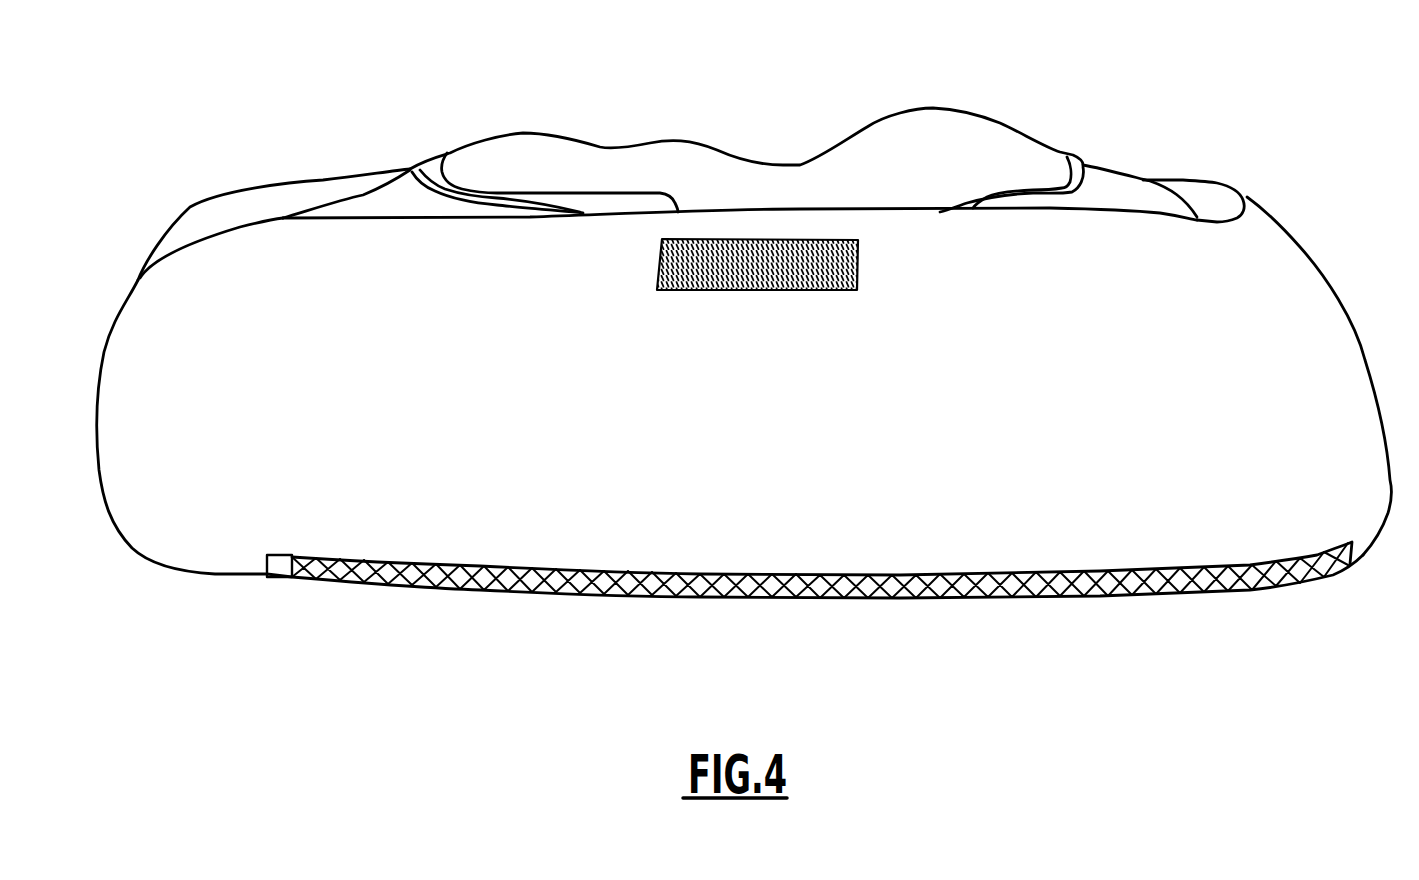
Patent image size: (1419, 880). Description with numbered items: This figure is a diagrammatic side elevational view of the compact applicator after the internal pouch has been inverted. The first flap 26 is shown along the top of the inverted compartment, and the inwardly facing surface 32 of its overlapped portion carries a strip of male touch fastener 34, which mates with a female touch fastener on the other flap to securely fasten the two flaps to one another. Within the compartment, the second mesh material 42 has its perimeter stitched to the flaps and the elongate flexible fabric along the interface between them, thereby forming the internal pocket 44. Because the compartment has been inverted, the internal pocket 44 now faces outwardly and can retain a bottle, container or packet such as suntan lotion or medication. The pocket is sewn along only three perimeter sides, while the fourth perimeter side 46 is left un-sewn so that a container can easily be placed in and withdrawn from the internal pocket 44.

The first flap 26 is at (1157, 212).
The inwardly facing surface 32 is at (610, 237).
The male touch fastener 34 is at (818, 278).
The second mesh material 42 is at (960, 593).
The internal pocket 44 is at (356, 602).
The fourth perimeter side 46 is at (263, 573).